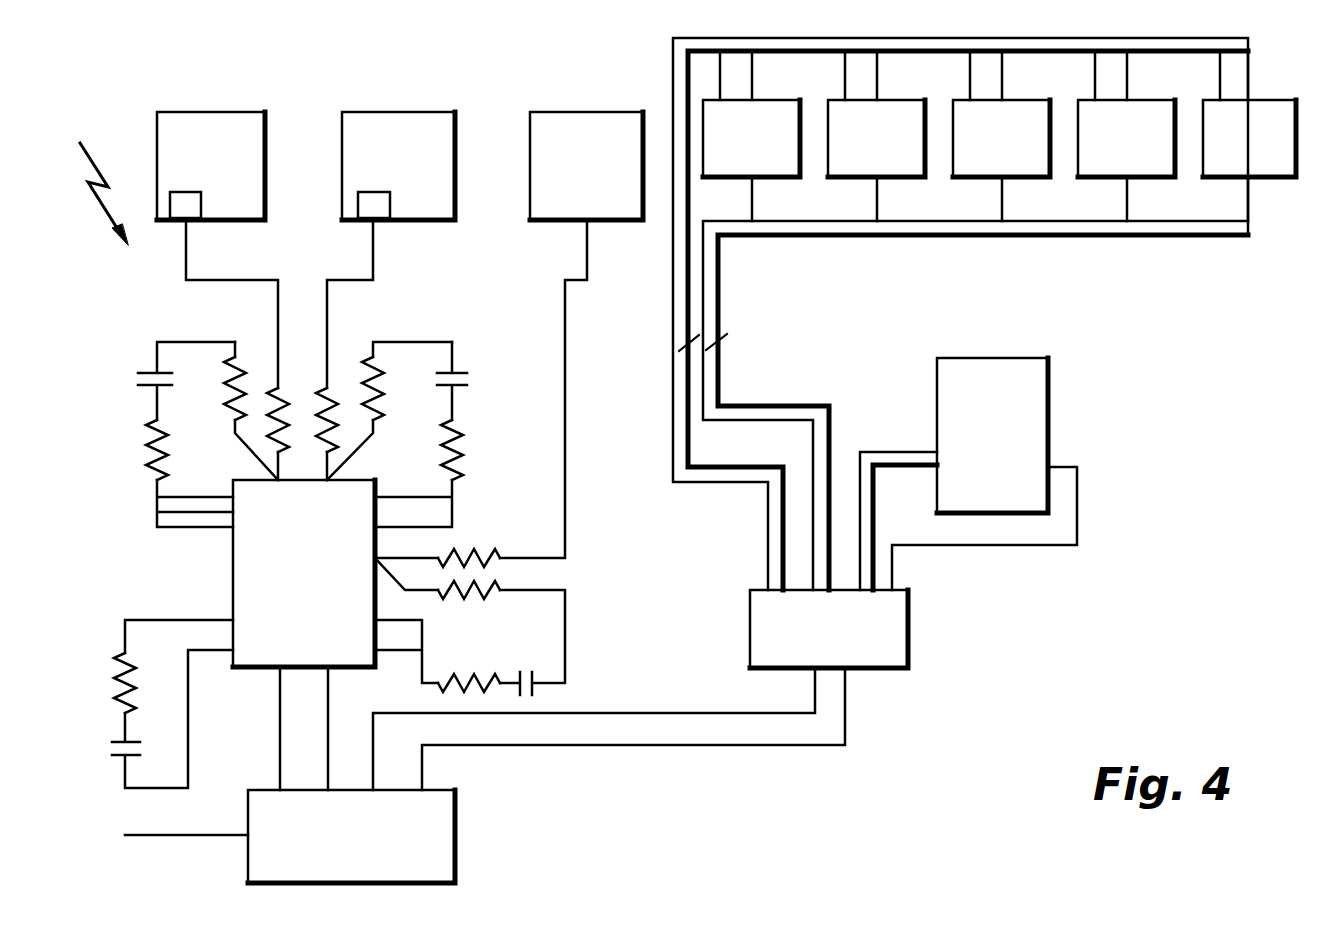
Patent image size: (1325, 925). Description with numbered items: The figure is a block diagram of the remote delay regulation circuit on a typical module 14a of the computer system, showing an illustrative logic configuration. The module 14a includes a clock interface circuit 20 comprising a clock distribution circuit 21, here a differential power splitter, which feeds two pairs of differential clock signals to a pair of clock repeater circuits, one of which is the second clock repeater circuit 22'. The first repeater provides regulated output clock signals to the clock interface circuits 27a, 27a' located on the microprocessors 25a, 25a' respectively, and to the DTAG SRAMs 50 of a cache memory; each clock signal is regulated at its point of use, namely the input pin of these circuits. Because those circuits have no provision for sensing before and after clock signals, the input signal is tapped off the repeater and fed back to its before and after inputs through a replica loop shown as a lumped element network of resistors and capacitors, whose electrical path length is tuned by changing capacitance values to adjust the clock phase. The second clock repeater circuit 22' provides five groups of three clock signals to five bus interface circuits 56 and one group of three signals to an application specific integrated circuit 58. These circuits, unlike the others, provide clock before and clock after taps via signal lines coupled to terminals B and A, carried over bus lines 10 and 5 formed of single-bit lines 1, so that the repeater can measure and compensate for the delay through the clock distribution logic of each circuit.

The module 14a is at (91, 181).
The microprocessor 25a' is at (211, 142).
The microprocessor 25a is at (398, 142).
The clock interface circuit 27a is at (204, 190).
The clock interface circuit 27a' is at (397, 190).
The DTAG SRAMs 50 is at (586, 112).
The bus interface circuits 56 is at (1045, 36).
The single-bit lines 1 is at (1259, 193).
The bus line 10 is at (678, 347).
The bus line 5 is at (724, 340).
The application specific integrated circuit 58 is at (965, 358).
The clock repeater circuit 22' is at (856, 629).
The clock interface circuit 20 is at (712, 772).
The clock distribution circuit 21 is at (455, 822).